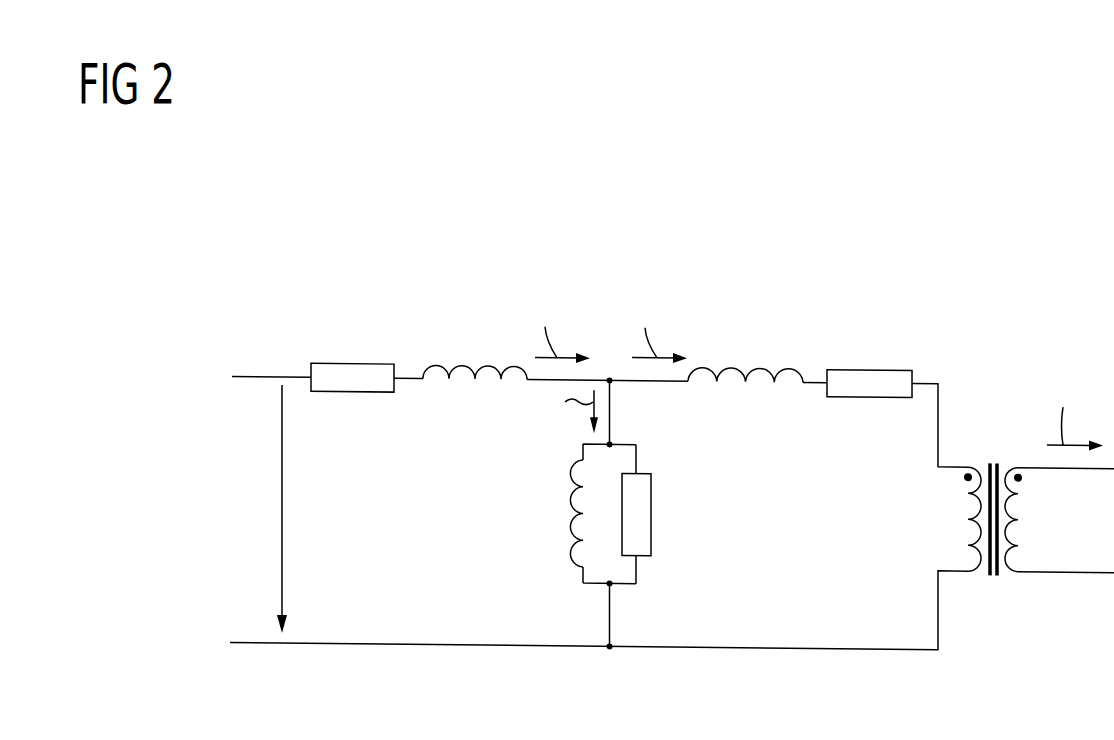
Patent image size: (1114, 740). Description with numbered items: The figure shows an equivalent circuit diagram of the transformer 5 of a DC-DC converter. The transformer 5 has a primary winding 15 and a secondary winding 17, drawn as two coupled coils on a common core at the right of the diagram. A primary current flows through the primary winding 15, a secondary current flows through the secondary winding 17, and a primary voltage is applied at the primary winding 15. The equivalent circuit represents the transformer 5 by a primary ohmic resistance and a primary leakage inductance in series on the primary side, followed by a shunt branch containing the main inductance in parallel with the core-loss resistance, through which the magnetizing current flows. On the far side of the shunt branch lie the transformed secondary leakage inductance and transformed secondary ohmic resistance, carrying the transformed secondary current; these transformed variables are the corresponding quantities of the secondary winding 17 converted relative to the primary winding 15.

The transformer 5 is at (440, 258).
The primary winding 15 is at (965, 562).
The secondary winding 17 is at (1017, 562).